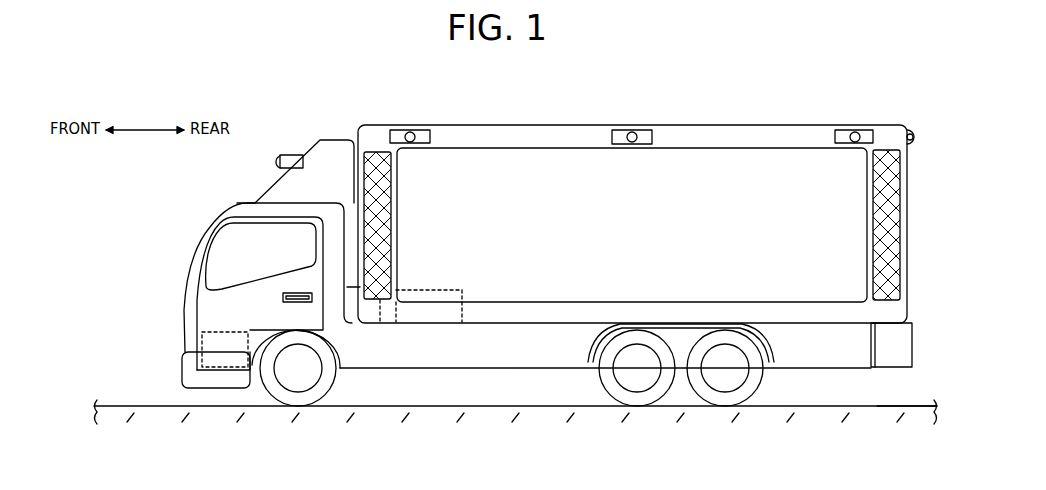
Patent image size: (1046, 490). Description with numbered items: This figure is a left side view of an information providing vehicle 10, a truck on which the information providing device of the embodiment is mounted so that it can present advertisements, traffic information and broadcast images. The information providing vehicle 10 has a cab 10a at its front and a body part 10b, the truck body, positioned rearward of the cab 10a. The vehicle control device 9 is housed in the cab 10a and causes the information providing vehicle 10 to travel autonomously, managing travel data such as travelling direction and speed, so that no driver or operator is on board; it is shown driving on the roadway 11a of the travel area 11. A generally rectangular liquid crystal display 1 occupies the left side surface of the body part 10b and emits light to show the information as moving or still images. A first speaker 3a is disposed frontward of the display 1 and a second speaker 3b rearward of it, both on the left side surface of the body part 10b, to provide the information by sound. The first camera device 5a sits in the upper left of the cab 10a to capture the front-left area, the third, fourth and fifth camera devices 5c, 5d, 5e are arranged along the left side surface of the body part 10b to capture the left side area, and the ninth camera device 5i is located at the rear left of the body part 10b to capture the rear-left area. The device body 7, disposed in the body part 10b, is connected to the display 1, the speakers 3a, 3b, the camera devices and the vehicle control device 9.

The display 1 is at (660, 243).
The first speaker 3a is at (373, 155).
The second speaker 3b is at (900, 222).
The first camera device 5a is at (278, 158).
The third camera device 5c is at (410, 131).
The fourth camera device 5d is at (634, 131).
The fifth camera device 5e is at (857, 131).
The ninth camera device 5i is at (912, 130).
The device body 7 is at (433, 323).
The vehicle control device 9 is at (237, 333).
The information providing vehicle 10 is at (162, 266).
The cab 10a is at (193, 320).
The body part 10b is at (492, 126).
The travel area 11 is at (155, 381).
The roadway 11a is at (890, 393).